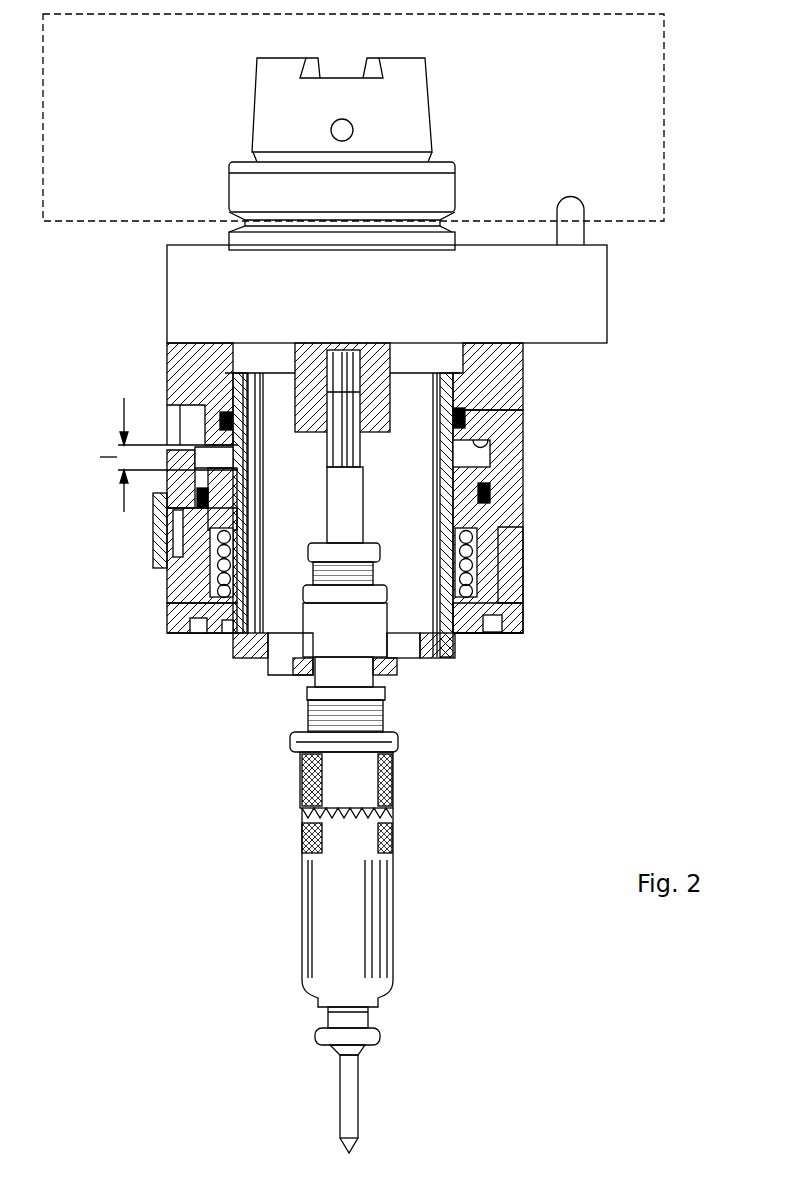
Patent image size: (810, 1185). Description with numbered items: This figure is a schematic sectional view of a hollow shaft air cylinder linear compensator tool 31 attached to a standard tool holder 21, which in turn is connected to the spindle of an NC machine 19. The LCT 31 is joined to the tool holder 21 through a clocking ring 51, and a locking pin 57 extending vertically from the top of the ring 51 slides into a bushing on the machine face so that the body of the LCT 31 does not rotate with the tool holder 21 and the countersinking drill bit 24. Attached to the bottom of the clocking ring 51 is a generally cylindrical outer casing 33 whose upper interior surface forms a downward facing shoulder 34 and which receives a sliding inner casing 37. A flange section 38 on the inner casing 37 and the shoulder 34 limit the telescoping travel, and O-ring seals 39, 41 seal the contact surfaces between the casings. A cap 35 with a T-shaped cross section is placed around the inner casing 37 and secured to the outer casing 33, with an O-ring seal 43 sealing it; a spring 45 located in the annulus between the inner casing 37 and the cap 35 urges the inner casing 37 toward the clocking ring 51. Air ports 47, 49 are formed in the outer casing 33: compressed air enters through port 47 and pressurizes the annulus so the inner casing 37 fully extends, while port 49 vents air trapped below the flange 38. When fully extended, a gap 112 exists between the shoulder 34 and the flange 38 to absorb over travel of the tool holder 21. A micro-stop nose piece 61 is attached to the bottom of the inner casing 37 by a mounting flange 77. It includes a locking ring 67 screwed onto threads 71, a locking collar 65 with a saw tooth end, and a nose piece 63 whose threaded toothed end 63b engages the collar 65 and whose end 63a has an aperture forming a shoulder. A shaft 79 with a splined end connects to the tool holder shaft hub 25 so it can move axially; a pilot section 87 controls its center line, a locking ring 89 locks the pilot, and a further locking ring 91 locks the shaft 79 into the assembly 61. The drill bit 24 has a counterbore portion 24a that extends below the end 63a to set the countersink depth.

The NC machine 19 is at (668, 28).
The standard tool holder 21 is at (432, 112).
The locking pin 57 is at (586, 228).
The clocking ring 51 is at (595, 310).
The tool holder shaft hub 25 is at (310, 342).
The shaft 79 is at (343, 486).
The hollow shaft air cylinder linear compensator tool 31 is at (700, 492).
The O-ring seal 39 is at (215, 375).
The air port 47 is at (167, 408).
The gap 112 is at (128, 455).
The inner casing 37 is at (438, 662).
The air port 49 is at (155, 502).
The downward facing shoulder 34 is at (497, 470).
The flange section 38 is at (490, 462).
The O-ring seal 41 is at (196, 498).
The outer casing 33 is at (187, 590).
The spring 45 is at (214, 560).
The cap 35 is at (197, 625).
The O-ring seal 43 is at (242, 645).
The mounting flange 77 is at (276, 672).
The locking ring 91 is at (382, 552).
The locking ring 89 is at (390, 602).
The pilot section 87 is at (388, 690).
The micro-stop nose piece 61 is at (432, 873).
The threads 71 is at (308, 712).
The locking ring 67 is at (292, 742).
The locking collar 65 is at (302, 780).
The threaded end of nose piece 63b is at (395, 830).
The nose piece 63 is at (395, 920).
The aperture end of nose piece 63a is at (382, 1036).
The counterbore portion 24a is at (360, 1052).
The countersinking drill bit 24 is at (340, 1110).